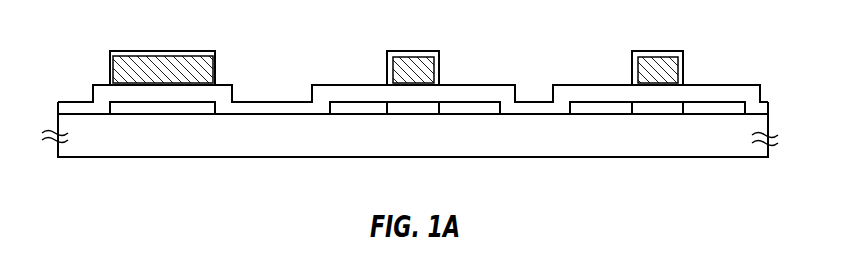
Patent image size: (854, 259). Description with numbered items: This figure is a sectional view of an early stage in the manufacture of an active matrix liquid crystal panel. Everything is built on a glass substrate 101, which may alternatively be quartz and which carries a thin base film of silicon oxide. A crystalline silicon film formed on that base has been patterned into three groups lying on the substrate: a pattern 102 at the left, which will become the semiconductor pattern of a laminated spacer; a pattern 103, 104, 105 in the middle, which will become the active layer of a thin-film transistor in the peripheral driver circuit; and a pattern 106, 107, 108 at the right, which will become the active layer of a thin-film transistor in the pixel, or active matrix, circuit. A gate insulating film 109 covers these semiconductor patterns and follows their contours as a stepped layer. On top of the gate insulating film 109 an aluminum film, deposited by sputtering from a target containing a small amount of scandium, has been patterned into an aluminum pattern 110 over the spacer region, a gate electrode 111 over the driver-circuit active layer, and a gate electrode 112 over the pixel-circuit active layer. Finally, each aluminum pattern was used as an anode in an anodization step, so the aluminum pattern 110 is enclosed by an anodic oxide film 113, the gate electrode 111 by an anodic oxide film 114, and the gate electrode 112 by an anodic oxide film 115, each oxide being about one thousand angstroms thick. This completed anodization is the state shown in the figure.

The glass substrate 101 is at (120, 150).
The pattern 102 is at (168, 110).
The pattern 103 is at (352, 110).
The pattern 104 is at (420, 110).
The pattern 105 is at (476, 110).
The pattern 106 is at (583, 110).
The pattern 107 is at (652, 110).
The pattern 108 is at (717, 110).
The gate insulating film 109 is at (232, 110).
The aluminum pattern 110 is at (120, 60).
The gate electrode 111 is at (402, 65).
The gate electrode 112 is at (645, 65).
The anodic oxide film 113 is at (178, 51).
The anodic oxide film 114 is at (397, 54).
The anodic oxide film 115 is at (640, 54).